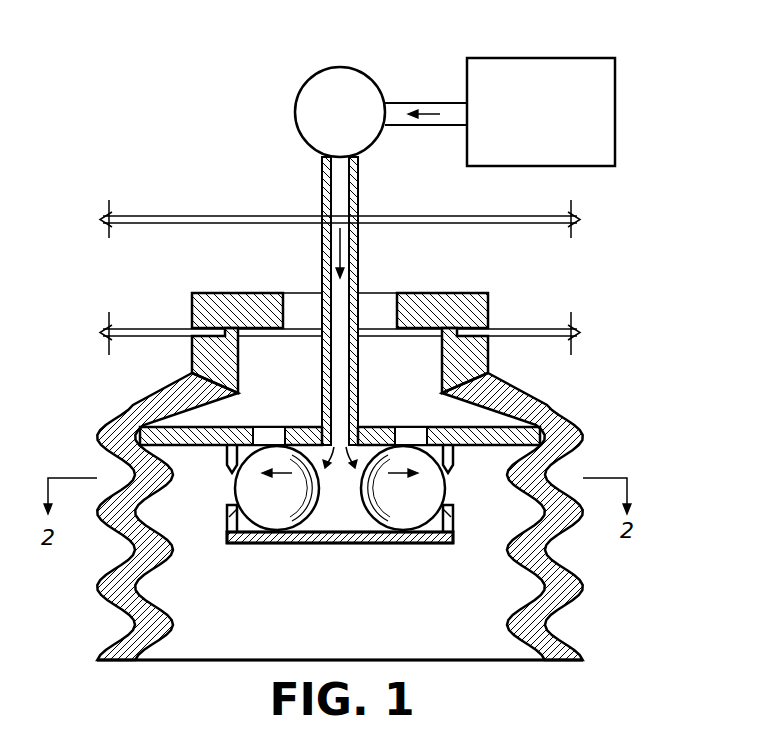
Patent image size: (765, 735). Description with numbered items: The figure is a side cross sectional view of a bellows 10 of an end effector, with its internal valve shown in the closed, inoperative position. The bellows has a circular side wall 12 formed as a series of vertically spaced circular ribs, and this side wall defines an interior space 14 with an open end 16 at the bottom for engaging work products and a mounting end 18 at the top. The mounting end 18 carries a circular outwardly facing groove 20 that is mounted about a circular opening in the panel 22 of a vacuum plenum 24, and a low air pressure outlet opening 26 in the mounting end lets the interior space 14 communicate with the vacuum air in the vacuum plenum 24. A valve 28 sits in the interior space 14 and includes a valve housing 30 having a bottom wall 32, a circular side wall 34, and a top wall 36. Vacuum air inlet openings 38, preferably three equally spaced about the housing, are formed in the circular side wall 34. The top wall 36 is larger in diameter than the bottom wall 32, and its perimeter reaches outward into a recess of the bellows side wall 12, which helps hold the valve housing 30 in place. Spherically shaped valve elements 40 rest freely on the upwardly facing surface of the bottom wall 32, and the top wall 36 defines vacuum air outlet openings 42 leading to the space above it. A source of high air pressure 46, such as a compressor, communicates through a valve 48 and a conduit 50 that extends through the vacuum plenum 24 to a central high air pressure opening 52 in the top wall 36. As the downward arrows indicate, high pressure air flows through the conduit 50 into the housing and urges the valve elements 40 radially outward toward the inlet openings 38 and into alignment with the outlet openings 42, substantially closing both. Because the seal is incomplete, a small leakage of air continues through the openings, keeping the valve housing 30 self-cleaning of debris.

The bellows 10 is at (592, 405).
The circular side wall 12 is at (103, 608).
The interior space 14 is at (350, 642).
The open end 16 is at (438, 660).
The mounting end 18 is at (247, 290).
The circular outwardly facing groove 20 is at (191, 331).
The panel 22 is at (540, 337).
The vacuum plenum 24 is at (467, 267).
The low air pressure outlet opening 26 is at (380, 307).
The valve 28 is at (271, 545).
The valve housing 30 is at (362, 545).
The bottom wall 32 is at (420, 545).
The circular side wall 34 is at (227, 522).
The top wall 36 is at (310, 428).
The vacuum air inlet openings 38 is at (227, 497).
The valve elements 40 is at (264, 505).
The vacuum air outlet openings 42 is at (263, 433).
The source of high air pressure 46 is at (592, 97).
The valve 48 is at (362, 87).
The conduit 50 is at (357, 185).
The central high air pressure opening 52 is at (352, 432).